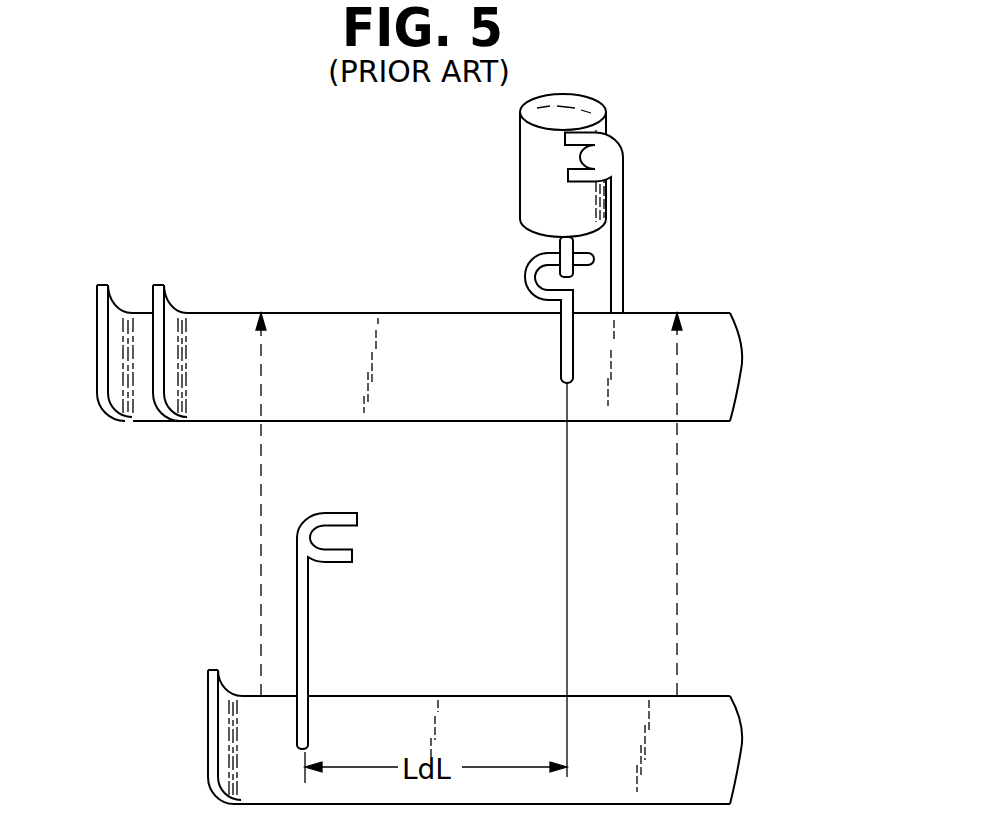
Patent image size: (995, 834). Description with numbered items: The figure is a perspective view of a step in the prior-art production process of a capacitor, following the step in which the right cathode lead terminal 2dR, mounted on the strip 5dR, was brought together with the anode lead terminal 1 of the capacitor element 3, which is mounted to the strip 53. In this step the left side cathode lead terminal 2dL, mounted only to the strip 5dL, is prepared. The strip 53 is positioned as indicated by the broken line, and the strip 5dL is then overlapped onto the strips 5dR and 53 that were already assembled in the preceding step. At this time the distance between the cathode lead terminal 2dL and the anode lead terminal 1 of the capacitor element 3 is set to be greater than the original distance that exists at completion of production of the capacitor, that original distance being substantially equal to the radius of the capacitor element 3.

The anode lead terminal 1 is at (530, 267).
The capacitor element 3 is at (538, 152).
The strip 53 is at (226, 325).
The strip 5dR is at (135, 322).
The strip 5dL is at (223, 723).
The right cathode lead terminal 2dR is at (626, 258).
The left side cathode lead terminal 2dL is at (352, 535).